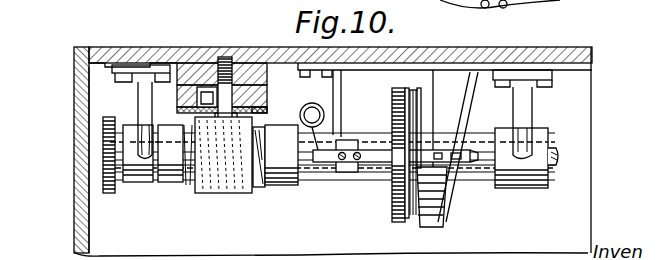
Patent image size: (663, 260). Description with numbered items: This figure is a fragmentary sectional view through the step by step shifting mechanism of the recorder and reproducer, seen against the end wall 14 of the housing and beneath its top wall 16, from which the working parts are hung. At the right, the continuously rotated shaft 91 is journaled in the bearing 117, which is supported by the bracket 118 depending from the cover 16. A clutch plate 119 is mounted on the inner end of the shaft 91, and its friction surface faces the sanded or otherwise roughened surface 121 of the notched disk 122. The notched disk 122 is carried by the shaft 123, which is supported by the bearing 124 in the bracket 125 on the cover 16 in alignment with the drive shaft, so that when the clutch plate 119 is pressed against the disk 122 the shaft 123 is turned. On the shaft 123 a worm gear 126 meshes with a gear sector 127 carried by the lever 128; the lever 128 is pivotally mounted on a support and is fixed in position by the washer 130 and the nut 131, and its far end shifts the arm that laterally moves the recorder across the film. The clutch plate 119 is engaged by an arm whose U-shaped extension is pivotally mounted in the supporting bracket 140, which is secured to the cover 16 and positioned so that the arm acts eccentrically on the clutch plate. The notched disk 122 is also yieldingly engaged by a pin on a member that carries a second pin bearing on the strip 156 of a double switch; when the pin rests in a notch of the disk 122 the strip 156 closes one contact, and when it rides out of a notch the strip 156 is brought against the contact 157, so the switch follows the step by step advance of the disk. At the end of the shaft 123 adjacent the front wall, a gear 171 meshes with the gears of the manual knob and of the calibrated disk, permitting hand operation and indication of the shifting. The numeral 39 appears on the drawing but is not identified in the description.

The end wall 14 is at (97, 100).
The top wall 16 is at (568, 52).
The frame 39 is at (74, 203).
The shaft 91 is at (558, 153).
The bearing 117 is at (553, 130).
The bracket 118 is at (553, 77).
The clutch plate 119 is at (410, 90).
The roughened surface 121 is at (409, 222).
The notched disk 122 is at (397, 223).
The shaft 123 is at (312, 182).
The bearing 124 is at (148, 182).
The bracket 125 is at (113, 72).
The worm gear 126 is at (262, 182).
The gear sector 127 is at (207, 193).
The lever 128 is at (267, 92).
The washer 130 is at (268, 115).
The nut 131 is at (233, 62).
The supporting bracket 140 is at (440, 227).
The strip 156 is at (460, 168).
The contact 157 is at (383, 157).
The gear 171 is at (108, 193).